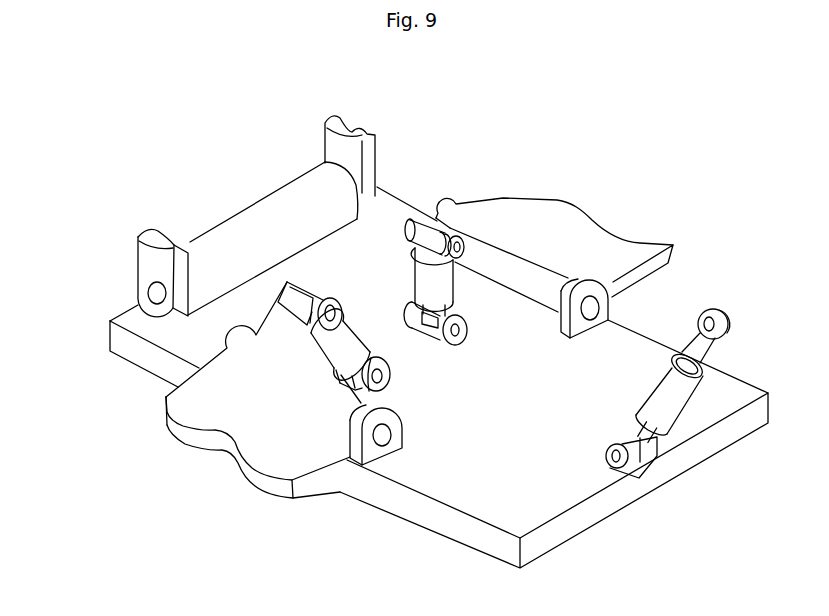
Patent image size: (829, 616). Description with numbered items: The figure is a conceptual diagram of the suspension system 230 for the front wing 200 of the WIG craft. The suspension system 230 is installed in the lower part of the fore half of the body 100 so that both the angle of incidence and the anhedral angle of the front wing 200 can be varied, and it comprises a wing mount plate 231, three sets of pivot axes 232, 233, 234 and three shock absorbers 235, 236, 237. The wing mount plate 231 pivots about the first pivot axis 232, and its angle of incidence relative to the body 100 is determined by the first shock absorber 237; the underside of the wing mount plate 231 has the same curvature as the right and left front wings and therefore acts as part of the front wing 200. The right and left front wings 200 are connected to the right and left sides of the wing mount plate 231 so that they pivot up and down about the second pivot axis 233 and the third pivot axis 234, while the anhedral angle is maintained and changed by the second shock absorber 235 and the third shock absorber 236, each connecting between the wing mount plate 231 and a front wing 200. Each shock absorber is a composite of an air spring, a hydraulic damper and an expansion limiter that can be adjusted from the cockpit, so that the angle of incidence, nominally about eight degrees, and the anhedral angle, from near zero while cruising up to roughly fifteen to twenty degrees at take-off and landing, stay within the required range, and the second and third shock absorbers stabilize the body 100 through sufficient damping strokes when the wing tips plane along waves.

The body 100 is at (170, 210).
The front wing 200 is at (598, 207).
The suspension system 230 is at (409, 191).
The wing mount plate 231 is at (574, 522).
The first pivot axis 232 is at (157, 293).
The second pivot axis 233 is at (378, 436).
The third pivot axis 234 is at (590, 305).
The second shock absorber 235 is at (334, 336).
The third shock absorber 236 is at (440, 282).
The first shock absorber 237 is at (670, 400).